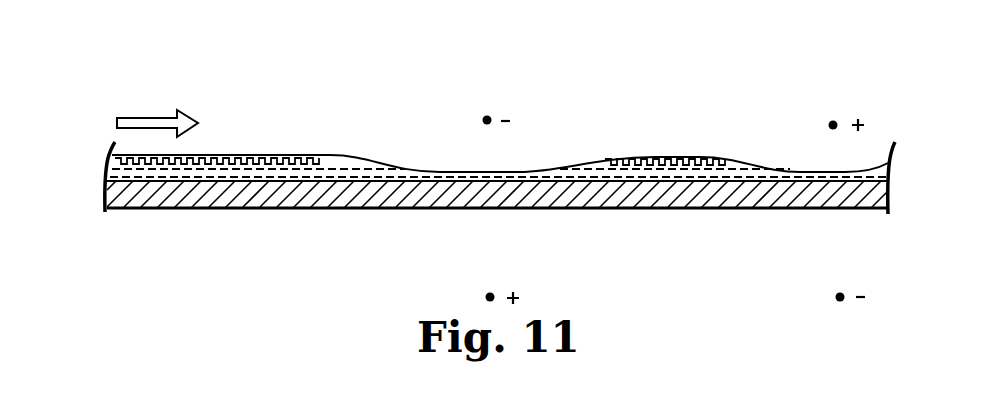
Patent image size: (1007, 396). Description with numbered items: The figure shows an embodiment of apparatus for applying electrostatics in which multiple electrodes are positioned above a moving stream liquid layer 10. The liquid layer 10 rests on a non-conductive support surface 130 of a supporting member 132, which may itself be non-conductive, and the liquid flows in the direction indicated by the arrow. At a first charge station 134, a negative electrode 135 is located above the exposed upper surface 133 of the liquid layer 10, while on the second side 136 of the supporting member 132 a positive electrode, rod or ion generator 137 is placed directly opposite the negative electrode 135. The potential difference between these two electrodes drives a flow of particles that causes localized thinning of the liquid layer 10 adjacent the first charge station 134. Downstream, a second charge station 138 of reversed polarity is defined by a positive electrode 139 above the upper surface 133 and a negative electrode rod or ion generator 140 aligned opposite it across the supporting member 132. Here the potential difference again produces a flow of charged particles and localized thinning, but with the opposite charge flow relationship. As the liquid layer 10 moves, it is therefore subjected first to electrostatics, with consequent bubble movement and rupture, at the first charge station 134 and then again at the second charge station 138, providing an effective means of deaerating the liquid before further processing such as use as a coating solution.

The moving stream liquid layer 10 is at (98, 166).
The support surface 130 is at (236, 180).
The supporting member 132 is at (96, 197).
The exposed upper surface 133 is at (322, 154).
The first charge station 134 is at (436, 108).
The negative electrode 135 is at (488, 118).
The second side of the supporting member 136 is at (318, 209).
The positive electrode, rod or ion generator 137 is at (491, 295).
The second charge station 138 is at (776, 99).
The positive electrode 139 is at (834, 123).
The negative electrode rod or ion generator 140 is at (841, 295).